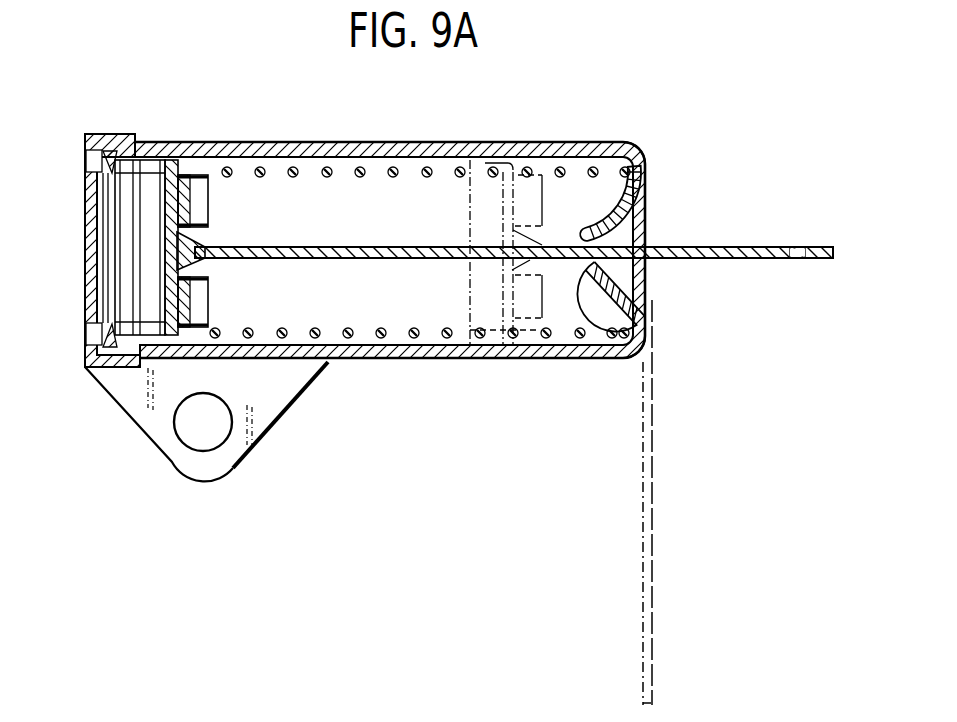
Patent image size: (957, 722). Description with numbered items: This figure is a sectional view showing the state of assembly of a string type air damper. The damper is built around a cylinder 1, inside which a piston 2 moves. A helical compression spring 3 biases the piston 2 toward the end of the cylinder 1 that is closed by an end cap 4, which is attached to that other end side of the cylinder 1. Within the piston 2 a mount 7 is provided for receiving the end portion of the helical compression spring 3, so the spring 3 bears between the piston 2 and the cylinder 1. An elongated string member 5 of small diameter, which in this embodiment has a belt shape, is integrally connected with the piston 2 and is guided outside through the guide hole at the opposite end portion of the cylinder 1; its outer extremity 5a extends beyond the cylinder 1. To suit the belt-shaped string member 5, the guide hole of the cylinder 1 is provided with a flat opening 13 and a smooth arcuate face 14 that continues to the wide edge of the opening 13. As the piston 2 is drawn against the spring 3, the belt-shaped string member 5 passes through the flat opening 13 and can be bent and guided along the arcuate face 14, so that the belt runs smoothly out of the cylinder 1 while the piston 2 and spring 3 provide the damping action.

The cylinder 1 is at (291, 142).
The piston 2 is at (196, 297).
The helical compression spring 3 is at (450, 337).
The end cap 4 is at (85, 245).
The string member 5 is at (398, 247).
The rod end 5a is at (818, 246).
The mount 7 is at (200, 208).
The flat opening 13 is at (588, 262).
The arcuate face 14 is at (647, 224).